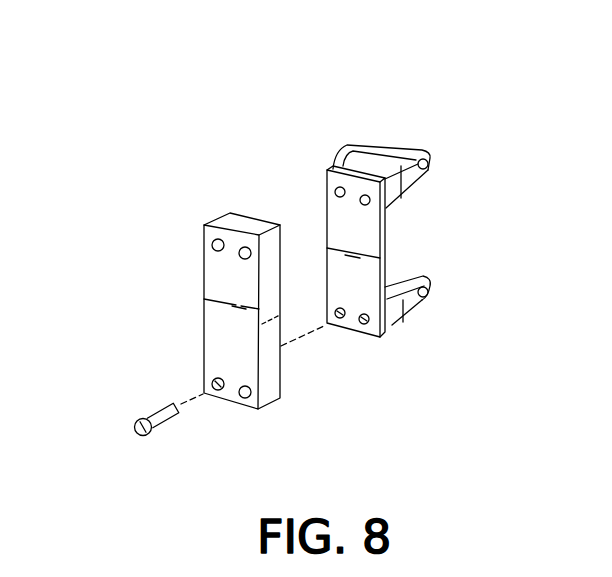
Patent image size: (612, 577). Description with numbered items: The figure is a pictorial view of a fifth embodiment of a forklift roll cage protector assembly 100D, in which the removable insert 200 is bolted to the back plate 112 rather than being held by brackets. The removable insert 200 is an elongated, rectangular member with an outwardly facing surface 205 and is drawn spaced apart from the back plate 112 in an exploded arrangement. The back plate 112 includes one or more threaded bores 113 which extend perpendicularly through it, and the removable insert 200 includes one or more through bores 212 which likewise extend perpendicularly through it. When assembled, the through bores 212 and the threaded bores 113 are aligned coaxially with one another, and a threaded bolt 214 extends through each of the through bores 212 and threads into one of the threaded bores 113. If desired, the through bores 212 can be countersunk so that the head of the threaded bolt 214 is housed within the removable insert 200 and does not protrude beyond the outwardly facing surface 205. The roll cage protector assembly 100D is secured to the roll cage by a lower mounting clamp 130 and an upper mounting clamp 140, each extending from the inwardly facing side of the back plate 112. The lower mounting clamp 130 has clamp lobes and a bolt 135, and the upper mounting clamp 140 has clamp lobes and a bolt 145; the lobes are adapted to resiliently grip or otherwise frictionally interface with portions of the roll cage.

The roll cage protector assembly 100D is at (160, 159).
The back plate 112 is at (322, 210).
The threaded bores 113 is at (363, 324).
The lower mounting clamp 130 is at (395, 328).
The bolt 135 is at (397, 282).
The upper mounting clamp 140 is at (339, 152).
The bolt 145 is at (395, 160).
The removable insert 200 is at (204, 280).
The outwardly facing surface 205 is at (218, 315).
The through bores 212 is at (218, 391).
The threaded bolt 214 is at (158, 415).